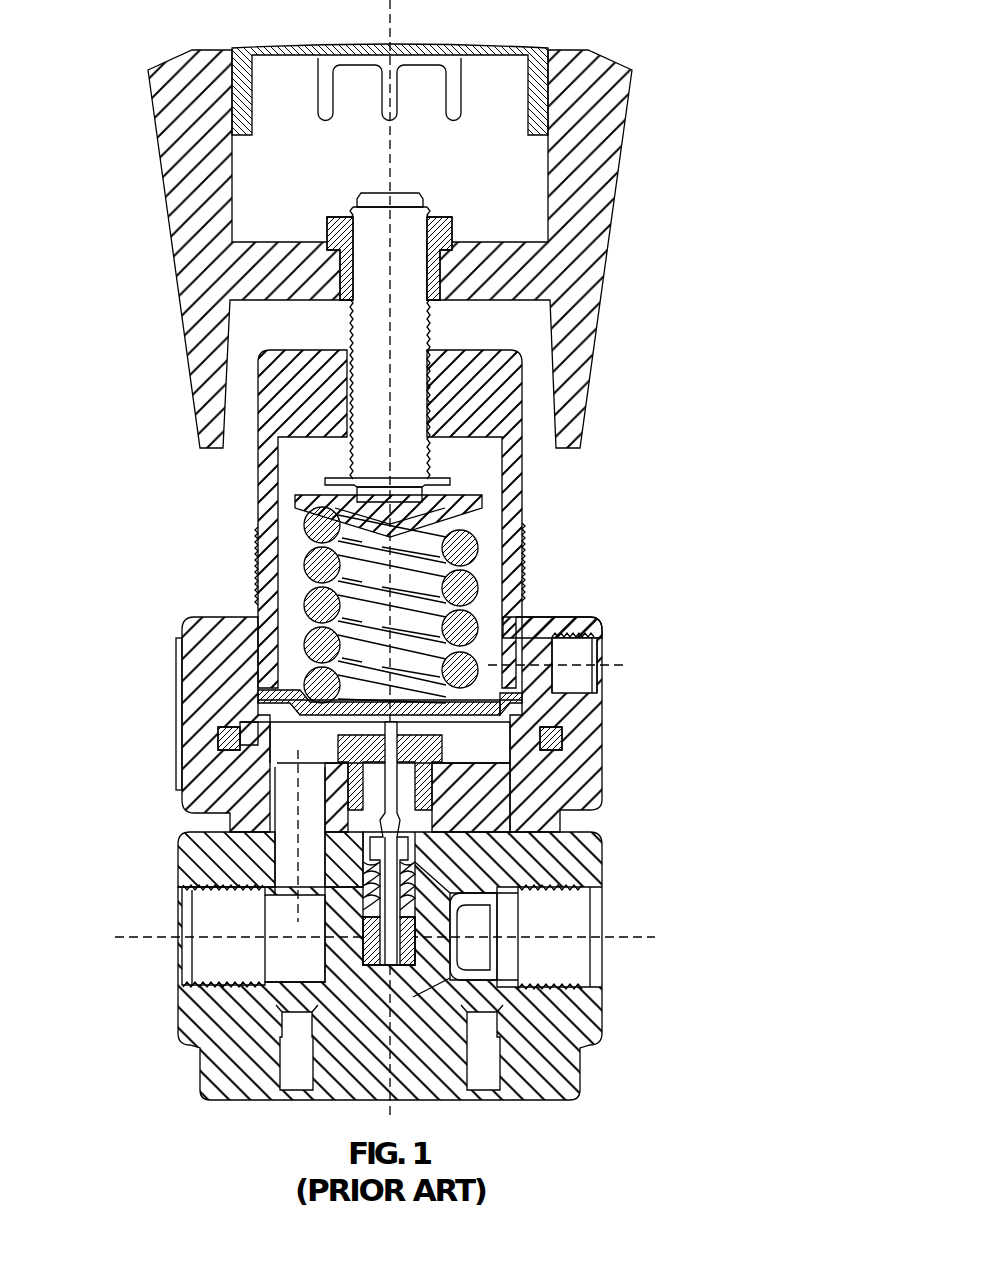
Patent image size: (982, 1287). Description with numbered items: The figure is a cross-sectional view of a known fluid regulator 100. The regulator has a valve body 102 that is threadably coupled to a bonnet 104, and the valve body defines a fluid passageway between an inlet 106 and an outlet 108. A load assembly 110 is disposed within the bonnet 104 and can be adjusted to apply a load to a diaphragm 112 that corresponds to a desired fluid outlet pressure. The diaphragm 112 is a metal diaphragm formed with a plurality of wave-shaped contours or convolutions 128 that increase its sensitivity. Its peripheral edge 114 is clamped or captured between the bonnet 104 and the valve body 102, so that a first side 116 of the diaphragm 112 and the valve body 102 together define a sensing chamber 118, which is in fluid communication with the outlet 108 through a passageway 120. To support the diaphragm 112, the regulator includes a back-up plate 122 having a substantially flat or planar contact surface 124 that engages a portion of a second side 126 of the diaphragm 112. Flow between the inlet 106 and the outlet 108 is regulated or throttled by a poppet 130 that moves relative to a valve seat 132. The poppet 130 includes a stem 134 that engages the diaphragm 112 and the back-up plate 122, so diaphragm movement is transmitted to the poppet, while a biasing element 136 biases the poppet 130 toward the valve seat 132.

The fluid regulator 100 is at (660, 43).
The valve body 102 is at (602, 850).
The bonnet 104 is at (598, 742).
The inlet 106 is at (602, 952).
The outlet 108 is at (178, 953).
The load assembly 110 is at (300, 472).
The diaphragm 112 is at (517, 712).
The peripheral edge 114 is at (250, 723).
The first side 116 is at (272, 722).
The sensing chamber 118 is at (502, 756).
The passageway 120 is at (265, 862).
The back-up plate 122 is at (513, 677).
The contact surface 124 is at (280, 675).
The second side 126 is at (520, 700).
The convolutions 128 is at (232, 724).
The poppet 130 is at (410, 848).
The valve seat 132 is at (283, 852).
The stem 134 is at (347, 782).
The biasing element 136 is at (450, 922).